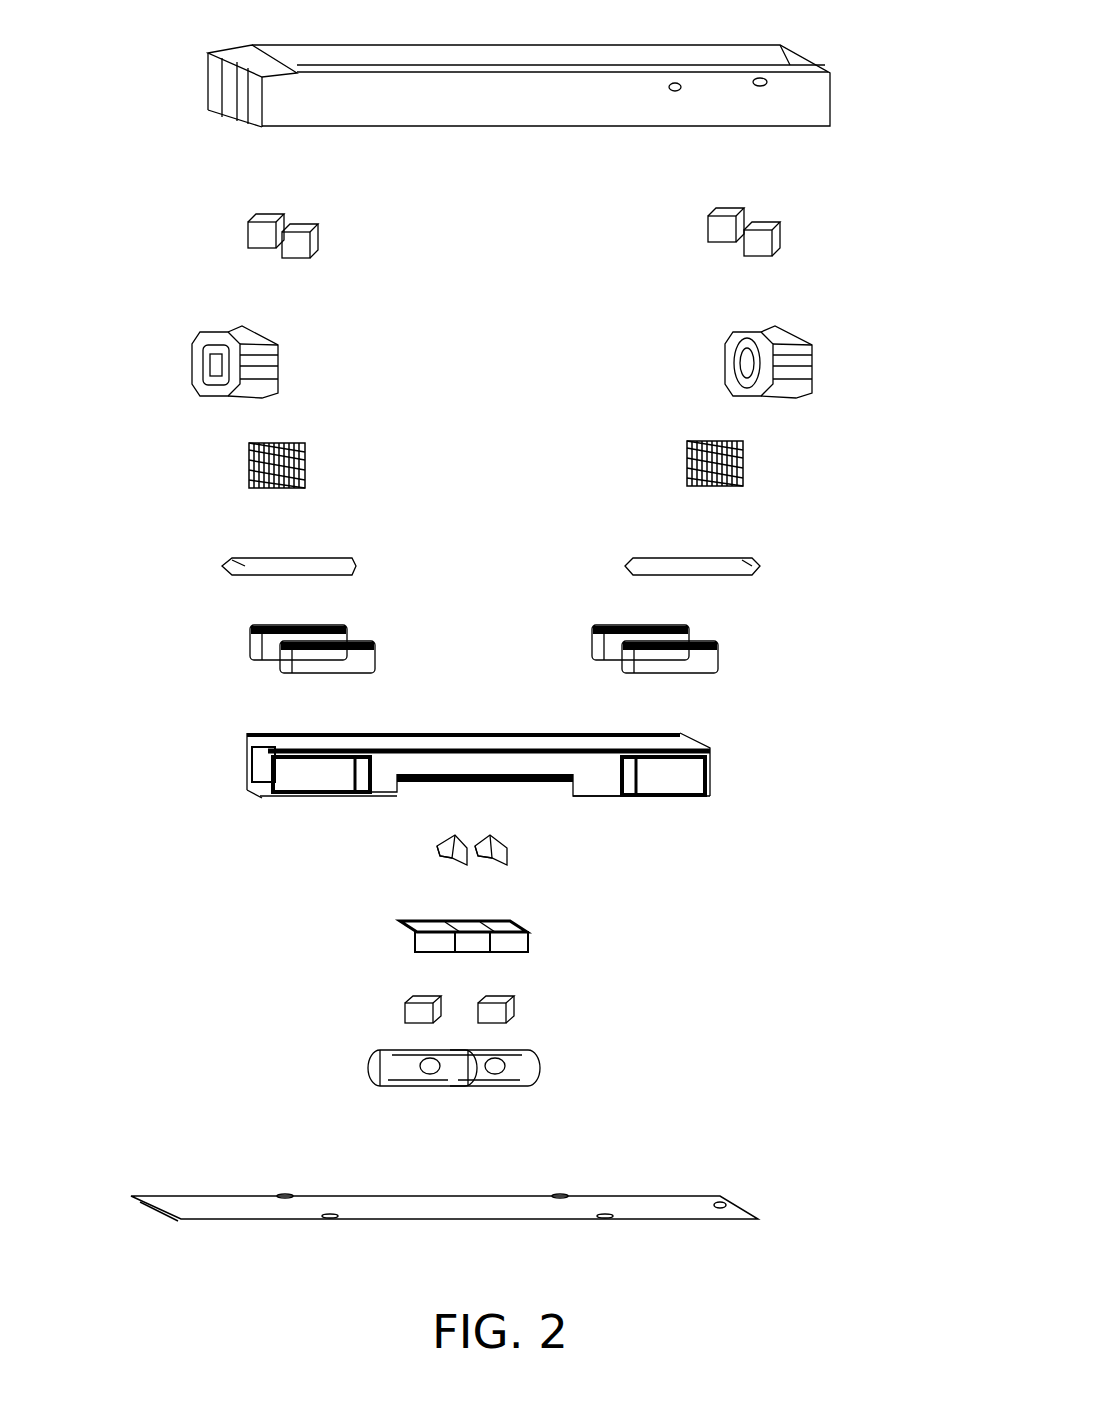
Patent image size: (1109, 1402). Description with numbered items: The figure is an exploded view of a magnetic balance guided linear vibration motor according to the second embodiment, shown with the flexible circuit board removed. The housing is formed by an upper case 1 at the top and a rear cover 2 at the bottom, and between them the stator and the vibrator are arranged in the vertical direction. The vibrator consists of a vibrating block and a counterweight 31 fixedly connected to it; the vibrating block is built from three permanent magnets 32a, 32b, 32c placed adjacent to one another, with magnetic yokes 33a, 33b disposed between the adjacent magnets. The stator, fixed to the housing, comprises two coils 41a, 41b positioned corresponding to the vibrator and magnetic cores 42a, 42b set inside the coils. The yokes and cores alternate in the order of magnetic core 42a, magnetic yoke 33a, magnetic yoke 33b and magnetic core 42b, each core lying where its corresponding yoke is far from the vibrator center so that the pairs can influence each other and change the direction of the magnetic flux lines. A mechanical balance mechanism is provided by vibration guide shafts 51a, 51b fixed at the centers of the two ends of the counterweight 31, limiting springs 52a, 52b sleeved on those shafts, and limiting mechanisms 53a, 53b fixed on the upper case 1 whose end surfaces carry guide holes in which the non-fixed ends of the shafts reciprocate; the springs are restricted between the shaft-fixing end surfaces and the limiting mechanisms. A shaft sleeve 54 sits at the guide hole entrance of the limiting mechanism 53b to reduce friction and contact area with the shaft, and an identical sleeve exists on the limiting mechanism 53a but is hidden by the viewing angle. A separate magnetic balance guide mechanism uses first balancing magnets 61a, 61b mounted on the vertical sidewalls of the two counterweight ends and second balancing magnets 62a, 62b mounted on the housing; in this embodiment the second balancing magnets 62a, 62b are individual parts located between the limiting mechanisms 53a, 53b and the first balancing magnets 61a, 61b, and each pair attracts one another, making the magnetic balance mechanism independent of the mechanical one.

The upper case 1 is at (727, 110).
The rear cover 2 is at (720, 1220).
The counterweight 31 is at (607, 772).
The permanent magnet 32a is at (415, 933).
The permanent magnet 32b is at (525, 926).
The permanent magnet 32c is at (530, 940).
The magnetic yoke 33a is at (440, 848).
The magnetic yoke 33b is at (507, 845).
The coil 41a is at (378, 1065).
The coil 41b is at (542, 1083).
The magnetic core 42a is at (410, 1008).
The magnetic core 42b is at (515, 1011).
The vibration guide shaft 51a is at (232, 560).
The vibration guide shaft 51b is at (758, 565).
The limiting spring 52a is at (247, 452).
The limiting spring 52b is at (748, 452).
The limiting mechanism 53a is at (215, 335).
The limiting mechanism 53b is at (940, 311).
The shaft sleeve 54 is at (765, 330).
The first balancing magnet 61a is at (252, 640).
The first balancing magnet 61b is at (712, 640).
The second balancing magnet 62a is at (245, 218).
The second balancing magnet 62b is at (776, 230).